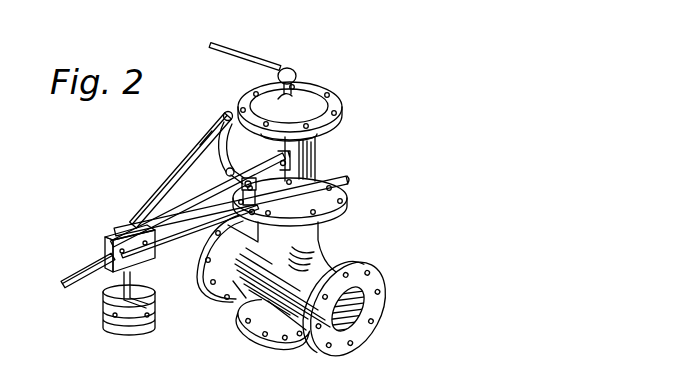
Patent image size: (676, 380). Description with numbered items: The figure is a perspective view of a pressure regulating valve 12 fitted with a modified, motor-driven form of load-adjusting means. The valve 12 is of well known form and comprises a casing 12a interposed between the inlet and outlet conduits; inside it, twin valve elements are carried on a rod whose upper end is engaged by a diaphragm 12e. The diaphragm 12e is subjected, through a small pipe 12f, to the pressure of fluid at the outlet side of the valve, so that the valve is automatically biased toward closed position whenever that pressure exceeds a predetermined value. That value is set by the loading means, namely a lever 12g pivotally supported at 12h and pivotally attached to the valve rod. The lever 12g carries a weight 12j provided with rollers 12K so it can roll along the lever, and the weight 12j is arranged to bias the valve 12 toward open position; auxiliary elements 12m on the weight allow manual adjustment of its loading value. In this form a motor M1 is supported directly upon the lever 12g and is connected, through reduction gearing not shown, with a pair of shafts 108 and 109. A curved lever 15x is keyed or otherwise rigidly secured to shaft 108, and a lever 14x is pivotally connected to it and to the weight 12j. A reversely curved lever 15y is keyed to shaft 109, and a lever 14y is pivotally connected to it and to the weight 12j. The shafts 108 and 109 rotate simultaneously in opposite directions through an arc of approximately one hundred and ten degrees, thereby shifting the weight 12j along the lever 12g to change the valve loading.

The pressure regulating valve 12 is at (324, 246).
The casing 12a is at (240, 300).
The diaphragm 12e is at (341, 128).
The small pipe 12f is at (267, 57).
The lever 12g is at (76, 276).
The pivot support 12h is at (318, 162).
The weight 12j is at (103, 283).
The rollers 12K is at (117, 226).
The auxiliary elements 12m is at (126, 330).
The lever 14x is at (176, 243).
The lever 14y is at (162, 182).
The curved lever 15x is at (351, 183).
The reversely curved lever 15y is at (224, 118).
The shaft 108 is at (246, 172).
The shaft 109 is at (202, 145).
The motor M1 is at (210, 194).